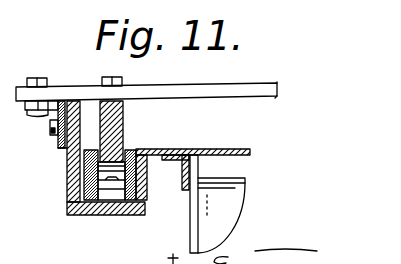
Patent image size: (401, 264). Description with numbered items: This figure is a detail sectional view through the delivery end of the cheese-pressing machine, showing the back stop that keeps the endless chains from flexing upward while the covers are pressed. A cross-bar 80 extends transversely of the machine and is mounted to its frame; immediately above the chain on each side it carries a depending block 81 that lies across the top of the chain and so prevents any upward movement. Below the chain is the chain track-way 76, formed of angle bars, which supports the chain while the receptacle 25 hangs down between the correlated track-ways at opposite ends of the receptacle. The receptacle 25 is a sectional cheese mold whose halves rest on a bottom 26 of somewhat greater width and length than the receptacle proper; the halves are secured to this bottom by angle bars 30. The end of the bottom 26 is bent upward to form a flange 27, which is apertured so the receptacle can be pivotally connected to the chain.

The cross-bar 80 is at (277, 96).
The depending blocks 81 is at (127, 125).
The chain track-way 76 is at (68, 189).
The angle bars 30 is at (190, 187).
The bottom 26 is at (250, 151).
The flange 27 is at (148, 196).
The receptacle 25 is at (189, 219).